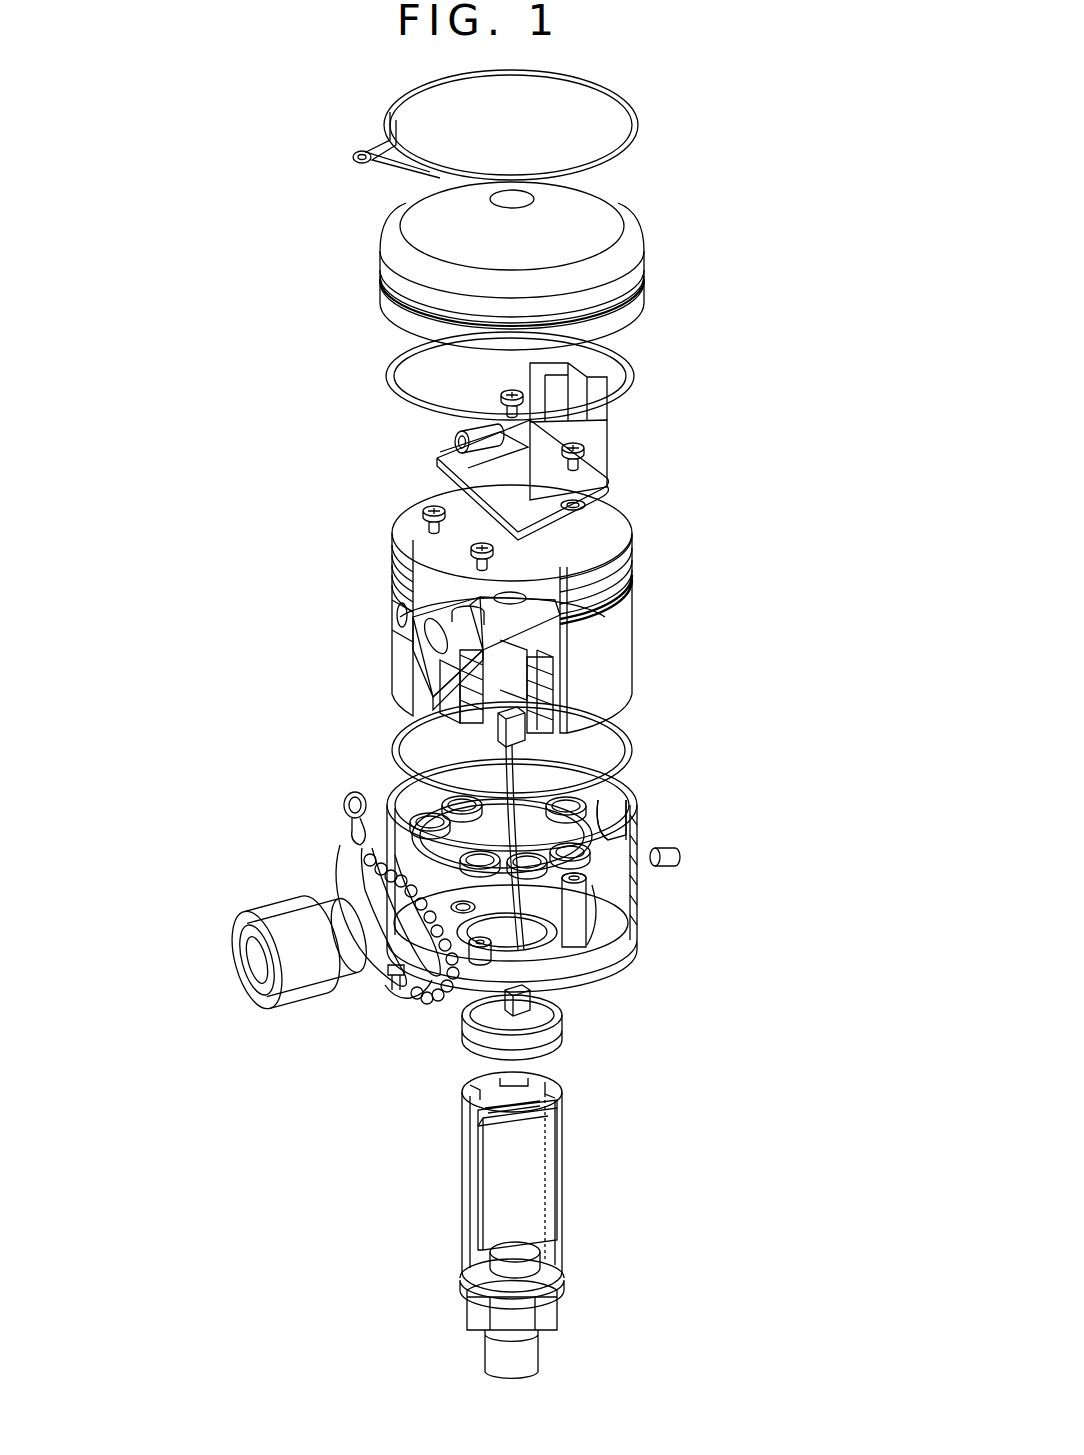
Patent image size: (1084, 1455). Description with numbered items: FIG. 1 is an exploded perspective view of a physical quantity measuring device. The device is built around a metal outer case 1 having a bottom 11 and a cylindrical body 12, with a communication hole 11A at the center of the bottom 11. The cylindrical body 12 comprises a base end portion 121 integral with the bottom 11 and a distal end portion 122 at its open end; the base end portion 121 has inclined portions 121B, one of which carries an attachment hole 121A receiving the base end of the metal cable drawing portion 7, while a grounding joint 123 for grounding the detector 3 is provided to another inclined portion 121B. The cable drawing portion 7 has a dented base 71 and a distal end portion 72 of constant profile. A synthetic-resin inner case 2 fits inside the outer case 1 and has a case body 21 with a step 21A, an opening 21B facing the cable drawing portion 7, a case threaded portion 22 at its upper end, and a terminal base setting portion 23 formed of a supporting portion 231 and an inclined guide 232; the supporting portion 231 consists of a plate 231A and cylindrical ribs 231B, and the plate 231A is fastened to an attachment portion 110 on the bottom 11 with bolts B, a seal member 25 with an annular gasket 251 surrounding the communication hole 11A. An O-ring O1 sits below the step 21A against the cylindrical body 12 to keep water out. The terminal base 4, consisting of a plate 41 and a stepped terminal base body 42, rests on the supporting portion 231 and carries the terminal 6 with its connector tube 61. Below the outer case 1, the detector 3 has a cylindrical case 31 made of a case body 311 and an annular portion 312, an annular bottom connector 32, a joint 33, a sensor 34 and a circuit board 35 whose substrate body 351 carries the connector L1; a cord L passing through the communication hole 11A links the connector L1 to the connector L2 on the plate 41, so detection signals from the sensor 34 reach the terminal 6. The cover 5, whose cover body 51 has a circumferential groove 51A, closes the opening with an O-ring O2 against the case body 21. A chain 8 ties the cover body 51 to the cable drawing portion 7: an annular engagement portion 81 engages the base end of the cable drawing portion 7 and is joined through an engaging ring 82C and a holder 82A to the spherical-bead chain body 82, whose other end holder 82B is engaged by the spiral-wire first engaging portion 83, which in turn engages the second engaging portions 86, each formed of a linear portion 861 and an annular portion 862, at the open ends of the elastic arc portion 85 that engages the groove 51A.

The outer case 1 is at (555, 919).
The inner case 2 is at (501, 609).
The detector 3 is at (548, 1218).
The terminal base 4 is at (581, 451).
The cover 5 is at (555, 248).
The terminal 6 is at (446, 453).
The cable drawing portion 7 is at (287, 968).
The chain 8 is at (468, 152).
The bottom 11 is at (562, 950).
The communication hole 11A is at (532, 965).
The cylindrical body 12 is at (555, 957).
The case body 21 is at (510, 609).
The step 21A is at (618, 610).
The opening 21B is at (395, 625).
The case threaded portion 22 is at (622, 578).
The terminal base setting portion 23 is at (479, 644).
The seal member 25 is at (561, 813).
The cylindrical case 31 is at (560, 1172).
The annular bottom connector 32 is at (560, 1032).
The joint 33 is at (560, 1305).
The sensor 34 is at (500, 1256).
The circuit board 35 is at (500, 1185).
The plate 41 is at (600, 497).
The terminal base body 42 is at (600, 455).
The cover body 51 is at (605, 220).
The groove 51A is at (640, 295).
The connector tube 61 is at (457, 440).
The base 71 is at (339, 938).
The distal end portion 72 is at (286, 952).
The annular engagement portion 81 is at (362, 885).
The chain body 82 is at (347, 943).
The holder 82A is at (400, 1038).
The holder 82B is at (340, 835).
The engaging ring 82C is at (385, 1005).
The first engaging portion 83 is at (350, 803).
The elastic arc portion 85 is at (545, 80).
The second engaging portions 86 is at (339, 161).
The attachment portion 110 is at (600, 800).
The base end portion 121 is at (655, 830).
The attachment hole 121A is at (372, 962).
The inclined portion 121B is at (608, 888).
The distal end portion 122 is at (662, 812).
The grounding joint 123 is at (680, 860).
The supporting portion 231 is at (560, 690).
The plate 231A is at (450, 598).
The cylindrical ribs 231B is at (435, 692).
The guide 232 is at (425, 655).
The annular gasket 251 is at (615, 812).
The case body 311 is at (560, 1200).
The annular portion 312 is at (560, 1262).
The substrate body 351 is at (532, 1148).
The linear portion 861 is at (388, 135).
The annular portion 862 is at (358, 152).
The bolt B is at (500, 390).
The cord L is at (505, 760).
The connector L1 is at (542, 995).
The connector L2 is at (500, 732).
The O-ring O1 is at (625, 765).
The O-ring O2 is at (630, 350).